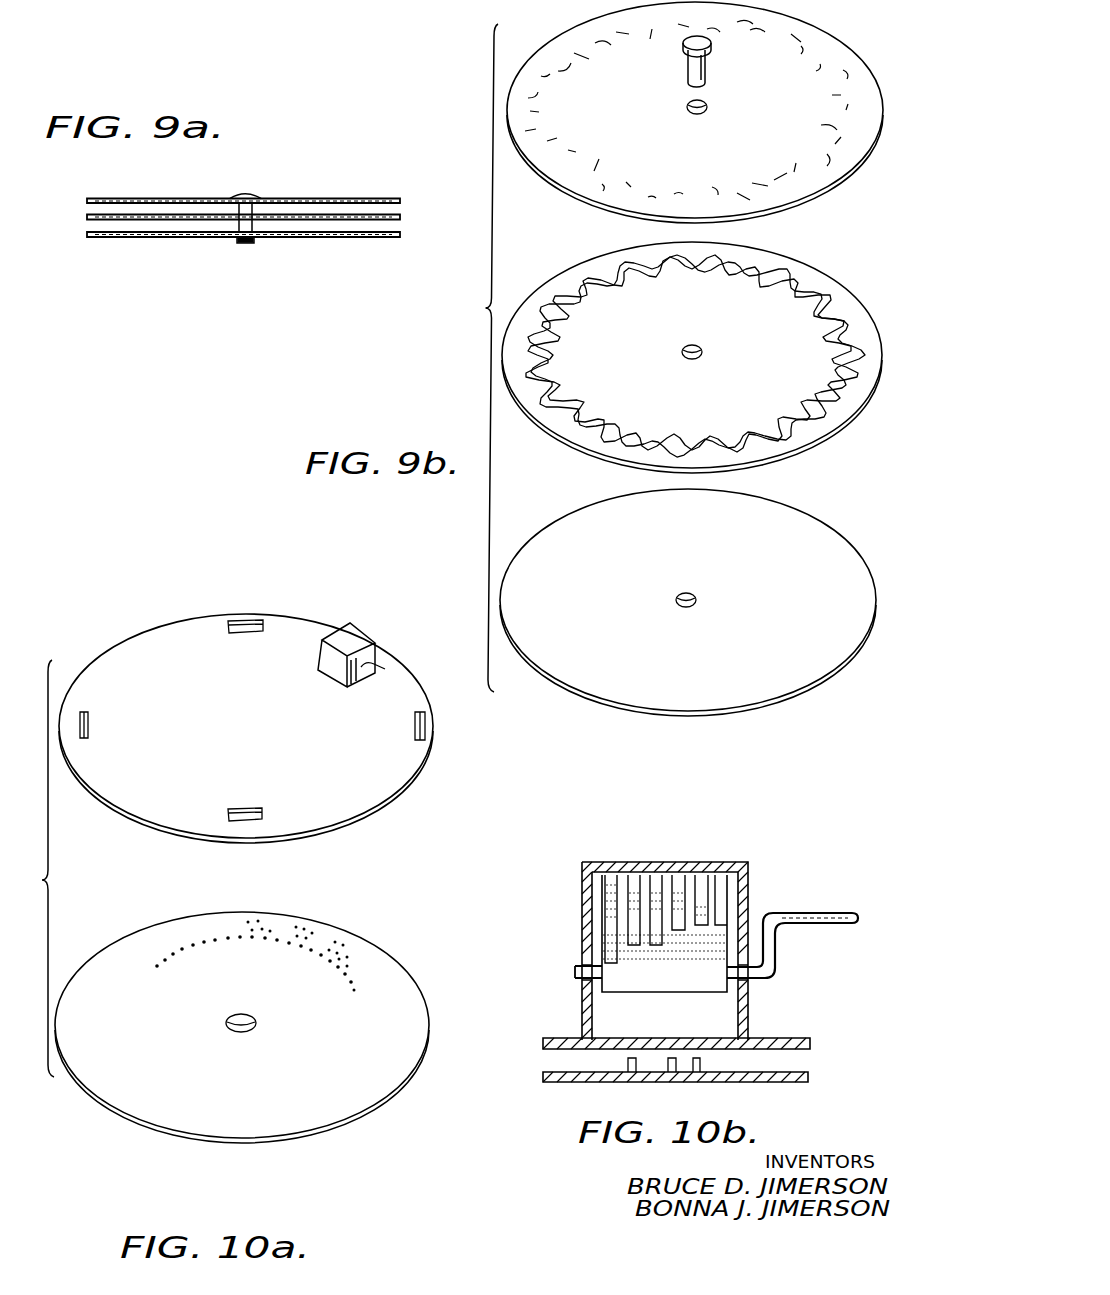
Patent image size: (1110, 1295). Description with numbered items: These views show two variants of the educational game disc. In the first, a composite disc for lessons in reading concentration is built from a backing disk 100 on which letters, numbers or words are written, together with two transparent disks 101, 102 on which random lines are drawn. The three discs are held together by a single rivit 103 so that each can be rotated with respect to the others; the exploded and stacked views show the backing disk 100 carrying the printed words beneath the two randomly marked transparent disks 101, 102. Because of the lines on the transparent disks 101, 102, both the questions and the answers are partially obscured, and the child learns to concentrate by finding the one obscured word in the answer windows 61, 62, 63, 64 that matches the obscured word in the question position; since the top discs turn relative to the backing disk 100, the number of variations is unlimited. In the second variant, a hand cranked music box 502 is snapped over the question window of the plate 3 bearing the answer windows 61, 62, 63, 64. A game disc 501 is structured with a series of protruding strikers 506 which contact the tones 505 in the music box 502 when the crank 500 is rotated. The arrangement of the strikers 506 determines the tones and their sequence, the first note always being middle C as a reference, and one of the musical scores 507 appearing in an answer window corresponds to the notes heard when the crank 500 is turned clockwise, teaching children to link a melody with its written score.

In FIG. 10A, the housing base plate 3 is at (363, 802).
In FIG. 10B, the housing base plate 3 is at (805, 1040).
In FIG. 10A, the answer window 61 is at (243, 623).
In FIG. 10A, the answer window 62 is at (425, 733).
In FIG. 10A, the answer window 63 is at (88, 727).
In FIG. 10A, the answer window 64 is at (250, 811).
In FIG. 9A, the backing disk 100 is at (398, 237).
In FIG. 9B, the backing disk 100 is at (827, 550).
In FIG. 9A, the transparent disk 101 is at (401, 218).
In FIG. 9B, the transparent disk 101 is at (848, 305).
In FIG. 9A, the transparent disk 102 is at (397, 199).
In FIG. 9B, the transparent disk 102 is at (845, 52).
In FIG. 9A, the rivit 103 is at (248, 197).
In FIG. 9B, the rivit 103 is at (709, 72).
In FIG. 10A, the crank 500 is at (366, 670).
In FIG. 10B, the crank 500 is at (805, 912).
In FIG. 10A, the game disc 501 is at (345, 1108).
In FIG. 10B, the game disc 501 is at (793, 1082).
In FIG. 10A, the hand cranked music box 502 is at (353, 640).
In FIG. 10B, the hand cranked music box 502 is at (700, 862).
In FIG. 10B, the tones 505 is at (656, 885).
In FIG. 10A, the protruding strikers 506 is at (350, 971).
In FIG. 10A, the musical scores 507 is at (267, 925).